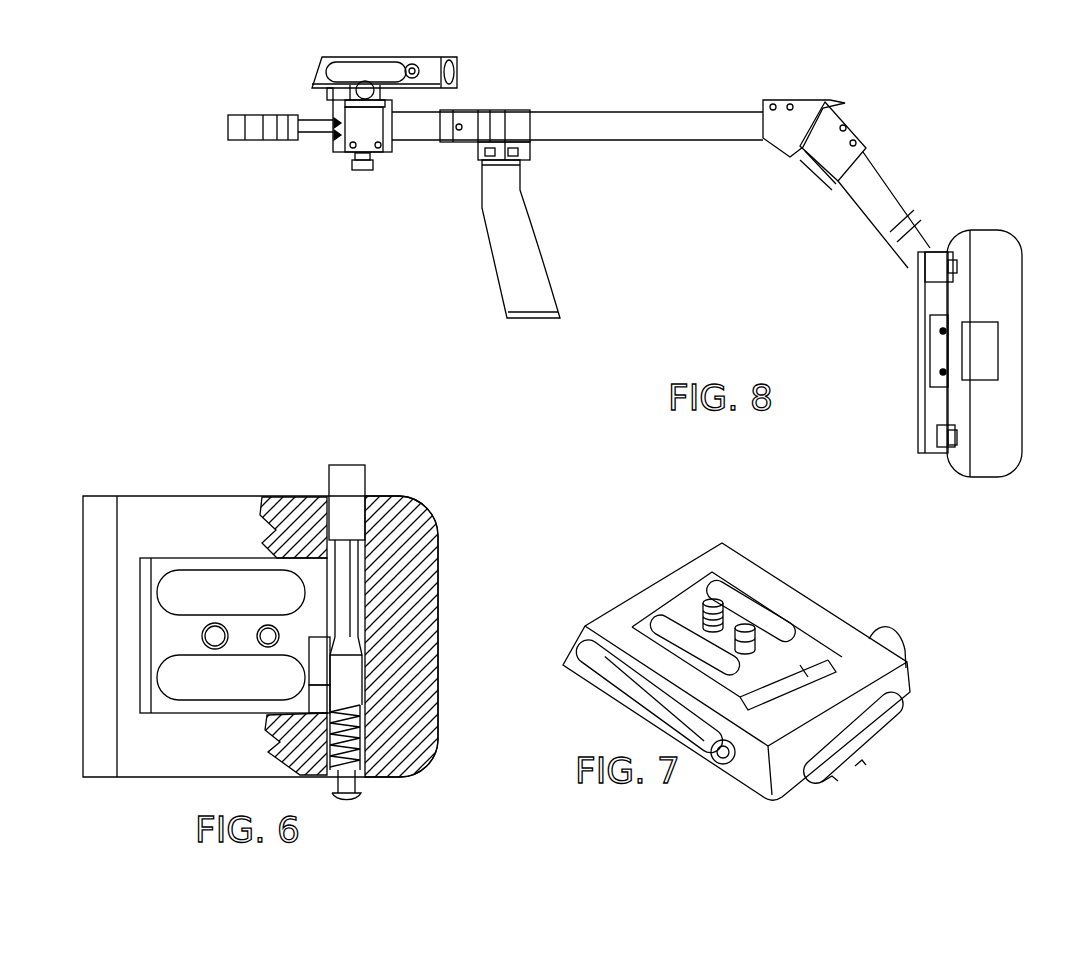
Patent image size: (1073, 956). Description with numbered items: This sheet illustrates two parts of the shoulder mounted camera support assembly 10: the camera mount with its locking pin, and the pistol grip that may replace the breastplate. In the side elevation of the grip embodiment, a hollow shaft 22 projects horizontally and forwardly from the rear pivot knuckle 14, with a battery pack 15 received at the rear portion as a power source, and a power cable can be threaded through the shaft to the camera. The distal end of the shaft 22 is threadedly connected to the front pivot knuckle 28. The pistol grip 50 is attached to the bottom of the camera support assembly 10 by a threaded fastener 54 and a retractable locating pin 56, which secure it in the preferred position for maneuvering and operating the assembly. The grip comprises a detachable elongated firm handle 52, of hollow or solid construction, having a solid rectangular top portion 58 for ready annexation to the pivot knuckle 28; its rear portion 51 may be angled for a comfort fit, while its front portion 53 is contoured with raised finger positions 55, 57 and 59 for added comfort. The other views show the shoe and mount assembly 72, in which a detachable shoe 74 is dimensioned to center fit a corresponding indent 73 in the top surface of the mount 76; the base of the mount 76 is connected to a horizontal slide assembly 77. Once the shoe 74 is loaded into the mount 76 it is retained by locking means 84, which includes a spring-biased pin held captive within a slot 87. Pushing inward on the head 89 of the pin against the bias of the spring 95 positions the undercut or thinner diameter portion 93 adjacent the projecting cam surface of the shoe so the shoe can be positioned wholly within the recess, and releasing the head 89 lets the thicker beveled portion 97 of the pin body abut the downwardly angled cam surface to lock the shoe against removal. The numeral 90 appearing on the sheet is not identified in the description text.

In FIG. 8, the shoulder mounted camera support assembly 10 is at (737, 68).
In FIG. 8, the rear pivot knuckle 14 is at (835, 118).
In FIG. 8, the battery pack 15 is at (988, 245).
In FIG. 8, the hollow shaft 22 is at (603, 112).
In FIG. 8, the front pivot knuckle 28 is at (468, 146).
In FIG. 8, the pistol grip 50 is at (511, 261).
In FIG. 8, the rear portion 51 is at (538, 230).
In FIG. 8, the elongated firm handle 52 is at (507, 182).
In FIG. 8, the front portion 53 is at (516, 290).
In FIG. 8, the threaded fastener 54 is at (487, 148).
In FIG. 8, the raised finger position 55 is at (492, 228).
In FIG. 8, the retractable locating pin 56 is at (511, 148).
In FIG. 8, the raised finger position 57 is at (498, 255).
In FIG. 8, the solid rectangular top portion 58 is at (548, 158).
In FIG. 8, the raised finger position 59 is at (500, 283).
In FIG. 7, the shoe and mount assembly 72 is at (808, 578).
In FIG. 6, the indent 73 is at (320, 634).
In FIG. 7, the shoe 74 is at (723, 588).
In FIG. 6, the mount 76 is at (135, 762).
In FIG. 7, the mount 76 is at (743, 767).
In FIG. 7, the horizontal slide assembly 77 is at (862, 768).
In FIG. 6, the locking means 84 is at (373, 613).
In FIG. 7, the locking means 84 is at (912, 637).
In FIG. 6, the slot 87 is at (362, 582).
In FIG. 6, the head 89 is at (358, 468).
In FIG. 7, the housing 90 is at (797, 798).
In FIG. 6, the undercut portion 93 is at (352, 557).
In FIG. 6, the spring 95 is at (357, 740).
In FIG. 6, the thicker beveled portion 97 is at (357, 673).